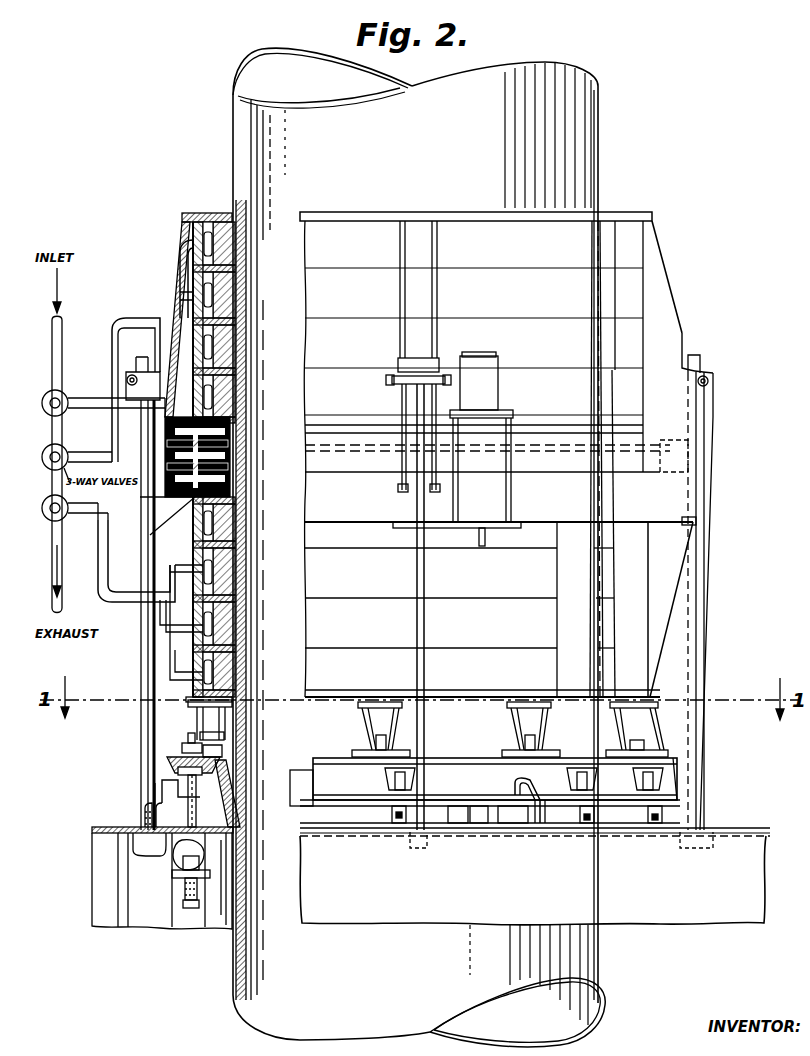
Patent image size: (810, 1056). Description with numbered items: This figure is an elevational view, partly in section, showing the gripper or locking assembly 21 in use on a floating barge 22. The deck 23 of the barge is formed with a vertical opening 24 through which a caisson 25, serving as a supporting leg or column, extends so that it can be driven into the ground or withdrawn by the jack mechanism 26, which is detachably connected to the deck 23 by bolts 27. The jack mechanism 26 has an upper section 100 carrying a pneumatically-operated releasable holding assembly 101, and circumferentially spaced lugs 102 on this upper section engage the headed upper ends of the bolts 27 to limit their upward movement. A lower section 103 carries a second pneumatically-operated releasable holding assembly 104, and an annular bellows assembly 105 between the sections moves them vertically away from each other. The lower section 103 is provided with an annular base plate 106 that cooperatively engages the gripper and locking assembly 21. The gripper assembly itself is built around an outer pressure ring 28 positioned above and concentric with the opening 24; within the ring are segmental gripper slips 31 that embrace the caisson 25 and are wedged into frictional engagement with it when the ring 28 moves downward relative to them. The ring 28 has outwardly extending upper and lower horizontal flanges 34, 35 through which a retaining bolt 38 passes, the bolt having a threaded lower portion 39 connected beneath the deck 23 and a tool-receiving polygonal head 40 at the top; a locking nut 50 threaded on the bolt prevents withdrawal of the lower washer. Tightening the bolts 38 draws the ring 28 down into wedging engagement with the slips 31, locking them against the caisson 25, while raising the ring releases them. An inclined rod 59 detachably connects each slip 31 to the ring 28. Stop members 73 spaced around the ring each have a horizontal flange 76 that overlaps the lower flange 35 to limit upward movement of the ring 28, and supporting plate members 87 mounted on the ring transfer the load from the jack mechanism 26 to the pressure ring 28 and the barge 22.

The gripper or locking assembly 21 is at (670, 777).
The floating barge 22 is at (667, 895).
The deck 23 is at (112, 826).
The vertical opening 24 is at (238, 916).
The caisson 25 is at (603, 127).
The jack mechanism 26 is at (174, 242).
The bolts 27 is at (708, 614).
The pressure ring 28 is at (228, 762).
The segmental gripper slips 31 is at (238, 770).
The upper horizontal flange 34 is at (167, 762).
The lower horizontal flange 35 is at (450, 823).
The retaining bolt 38 is at (398, 814).
The threaded lower portion 39 is at (183, 900).
The polygonal head 40 is at (180, 748).
The locking nut 50 is at (185, 880).
The inclined rod 59 is at (241, 810).
The stop member 73 is at (136, 810).
The horizontal flange 76 is at (518, 790).
The supporting plate member 87 is at (718, 729).
The upper section 100 is at (628, 306).
The pneumatically-operated releasable holding assembly 101 is at (210, 278).
The lugs 102 is at (708, 390).
The lower section 103 is at (612, 580).
The pneumatically-operated releasable holding assembly 104 is at (205, 606).
The annular bellows assembly 105 is at (170, 496).
The annular base plate 106 is at (322, 697).